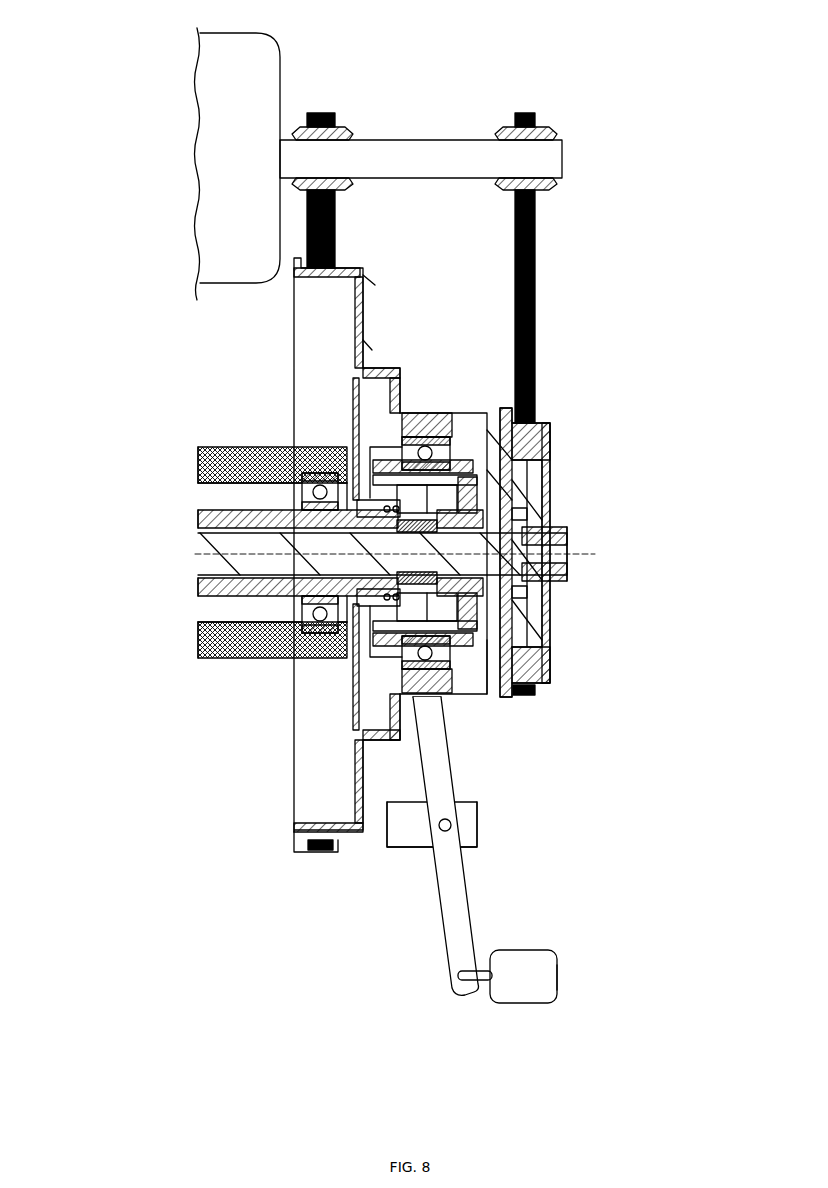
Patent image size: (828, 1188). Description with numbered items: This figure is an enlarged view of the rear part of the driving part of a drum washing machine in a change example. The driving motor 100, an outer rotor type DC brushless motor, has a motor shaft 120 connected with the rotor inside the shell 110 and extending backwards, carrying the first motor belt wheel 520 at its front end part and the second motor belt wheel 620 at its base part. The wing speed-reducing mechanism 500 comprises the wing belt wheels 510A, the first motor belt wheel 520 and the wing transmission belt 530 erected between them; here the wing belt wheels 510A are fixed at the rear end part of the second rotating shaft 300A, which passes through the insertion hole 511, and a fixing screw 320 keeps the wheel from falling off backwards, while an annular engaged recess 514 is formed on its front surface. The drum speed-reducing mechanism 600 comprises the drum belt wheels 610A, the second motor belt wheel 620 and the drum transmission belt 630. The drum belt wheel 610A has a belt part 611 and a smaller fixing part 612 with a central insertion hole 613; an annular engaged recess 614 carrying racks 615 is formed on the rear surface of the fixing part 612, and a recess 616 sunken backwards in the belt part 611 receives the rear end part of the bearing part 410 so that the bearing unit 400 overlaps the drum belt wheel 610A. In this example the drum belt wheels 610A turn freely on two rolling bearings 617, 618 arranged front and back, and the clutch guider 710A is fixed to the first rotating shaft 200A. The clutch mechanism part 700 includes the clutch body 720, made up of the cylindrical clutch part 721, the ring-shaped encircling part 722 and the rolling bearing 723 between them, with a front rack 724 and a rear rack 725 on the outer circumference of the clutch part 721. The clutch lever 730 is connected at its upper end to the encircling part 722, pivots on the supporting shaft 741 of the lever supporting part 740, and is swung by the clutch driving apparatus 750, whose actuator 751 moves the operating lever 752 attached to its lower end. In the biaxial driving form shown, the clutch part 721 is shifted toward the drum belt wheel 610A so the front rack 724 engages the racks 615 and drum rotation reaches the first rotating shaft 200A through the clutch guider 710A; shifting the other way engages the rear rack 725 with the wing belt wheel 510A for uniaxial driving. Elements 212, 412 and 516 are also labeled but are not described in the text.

The driving motor 100 is at (178, 70).
The shell 110 is at (284, 75).
The motor shaft 120 is at (430, 138).
The first rotating shaft 200A is at (212, 508).
The second rotating shaft 300A is at (210, 580).
The fixing screw 320 is at (575, 540).
The bearing unit 400 is at (198, 450).
The bearing part 410 is at (240, 448).
The hub lower portion 412 is at (240, 660).
The hub bearing 212 is at (320, 475).
The wing speed-reducing mechanism 500 is at (558, 320).
The wing belt wheels 510A is at (560, 636).
The insertion hole 511 is at (530, 526).
The engaged recess 514 is at (530, 602).
The frame bolt 516 is at (550, 672).
The first motor belt wheel 520 is at (547, 122).
The wing transmission belt 530 is at (538, 258).
The drum speed-reducing mechanism 600 is at (296, 298).
The drum belt wheels 610A is at (285, 805).
The belt part 611 is at (368, 284).
The fixing part 612 is at (380, 360).
The insertion hole 613 is at (352, 505).
The engaged recess 614 is at (422, 450).
The rack 615 is at (396, 458).
The recess 616 is at (316, 775).
The rolling bearing 617 is at (300, 606).
The rolling bearing 618 is at (365, 594).
The second motor belt wheel 620 is at (350, 125).
The drum transmission belt 630 is at (338, 220).
The clutch mechanism part 700 is at (478, 815).
The clutch guider 710A is at (527, 465).
The clutch body 720 is at (497, 432).
The clutch part 721 is at (456, 466).
The encircling part 722 is at (437, 430).
The rolling bearing 723 is at (440, 690).
The front rack 724 is at (445, 700).
The rear rack 725 is at (497, 686).
The clutch lever 730 is at (440, 905).
The lever supporting part 740 is at (410, 845).
The supporting shaft 741 is at (452, 832).
The clutch driving apparatus 750 is at (535, 950).
The actuator 751 is at (558, 976).
The operating lever 752 is at (483, 984).